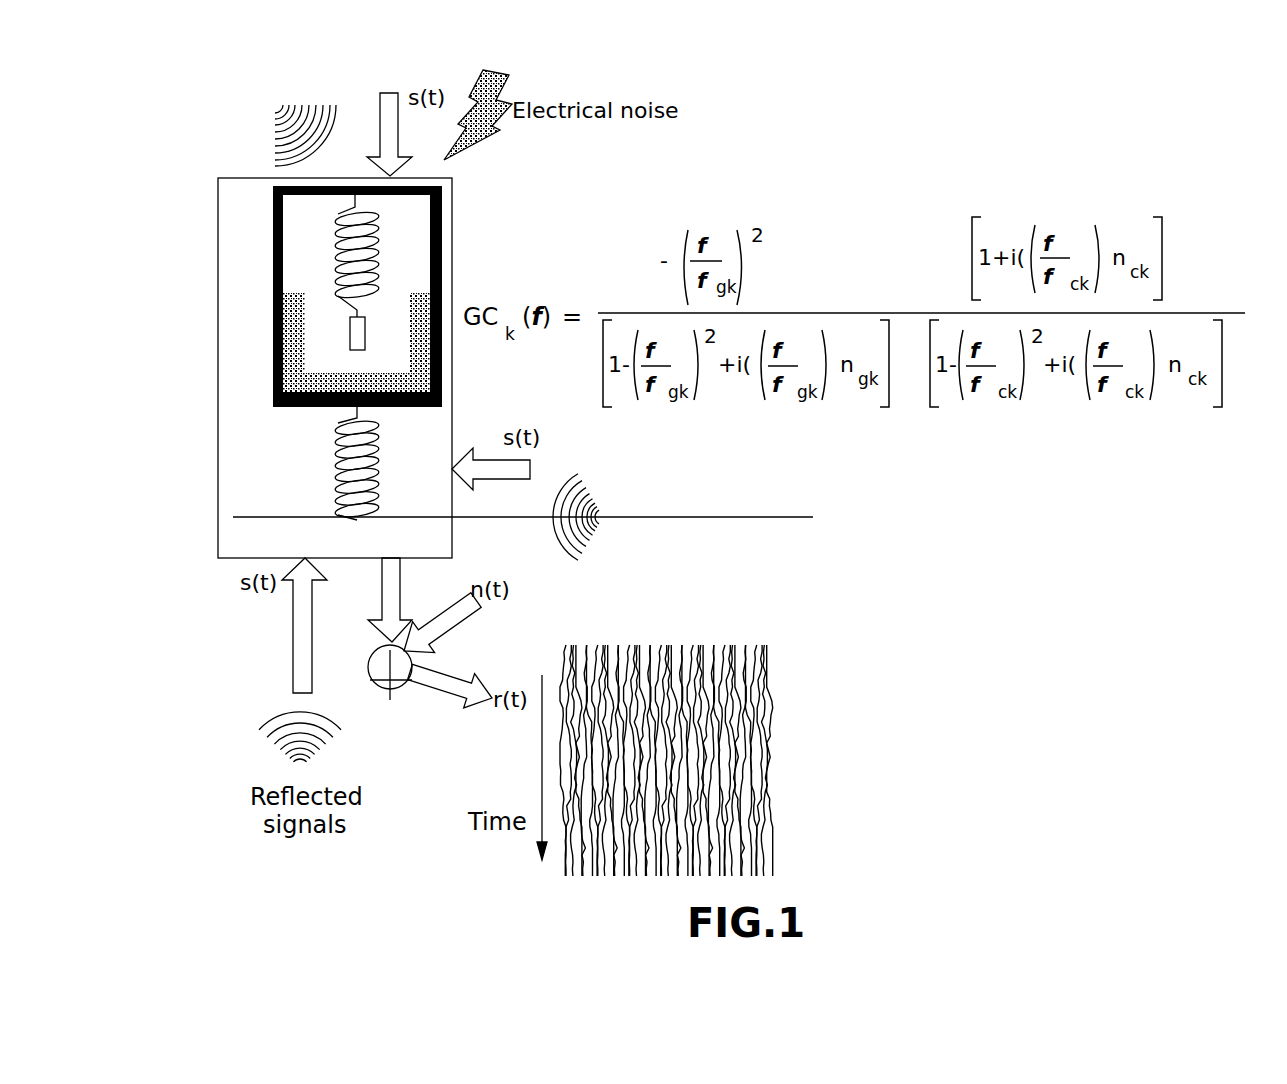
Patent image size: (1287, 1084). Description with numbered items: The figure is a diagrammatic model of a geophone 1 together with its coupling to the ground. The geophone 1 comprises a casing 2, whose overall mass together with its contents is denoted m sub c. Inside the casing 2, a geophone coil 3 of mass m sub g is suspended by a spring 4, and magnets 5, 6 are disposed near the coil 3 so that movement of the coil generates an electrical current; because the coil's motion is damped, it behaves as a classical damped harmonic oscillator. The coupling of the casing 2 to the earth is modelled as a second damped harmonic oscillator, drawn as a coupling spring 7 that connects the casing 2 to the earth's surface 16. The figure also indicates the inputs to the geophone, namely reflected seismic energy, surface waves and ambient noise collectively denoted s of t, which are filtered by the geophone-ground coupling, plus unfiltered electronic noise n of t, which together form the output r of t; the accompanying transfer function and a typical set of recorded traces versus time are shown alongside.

The geophone 1 is at (484, 203).
The casing 2 is at (273, 295).
The geophone coil 3 is at (366, 334).
The spring 4 is at (335, 217).
The magnet 5 is at (305, 334).
The magnet 6 is at (410, 331).
The coupling spring 7 is at (335, 458).
The earth's surface 16 is at (813, 517).